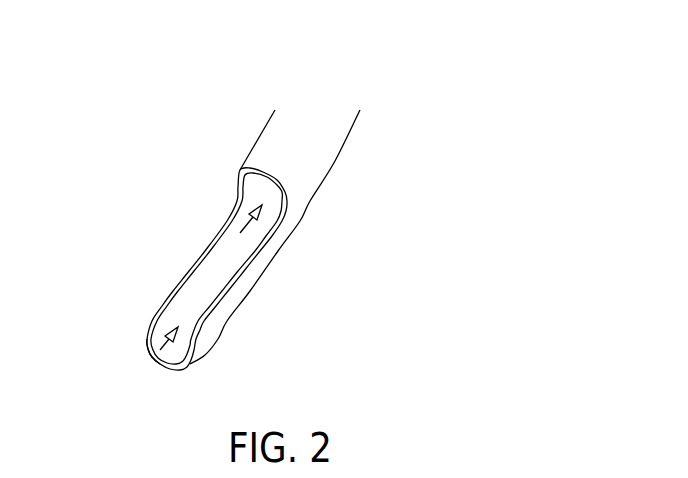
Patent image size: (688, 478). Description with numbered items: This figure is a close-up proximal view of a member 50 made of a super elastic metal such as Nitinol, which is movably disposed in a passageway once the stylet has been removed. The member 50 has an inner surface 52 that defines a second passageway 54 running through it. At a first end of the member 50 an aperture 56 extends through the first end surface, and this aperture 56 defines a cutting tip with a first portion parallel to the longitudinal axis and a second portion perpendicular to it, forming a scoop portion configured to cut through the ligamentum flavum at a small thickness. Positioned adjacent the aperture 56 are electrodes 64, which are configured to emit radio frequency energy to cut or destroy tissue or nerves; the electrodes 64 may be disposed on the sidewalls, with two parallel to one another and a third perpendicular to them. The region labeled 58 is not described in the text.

The member 50 is at (406, 250).
The inner surface 52 is at (205, 292).
The second passageway 54 is at (240, 233).
The aperture 56 is at (162, 364).
The rounded end of channel 58 is at (150, 352).
The electrode 64 is at (172, 290).